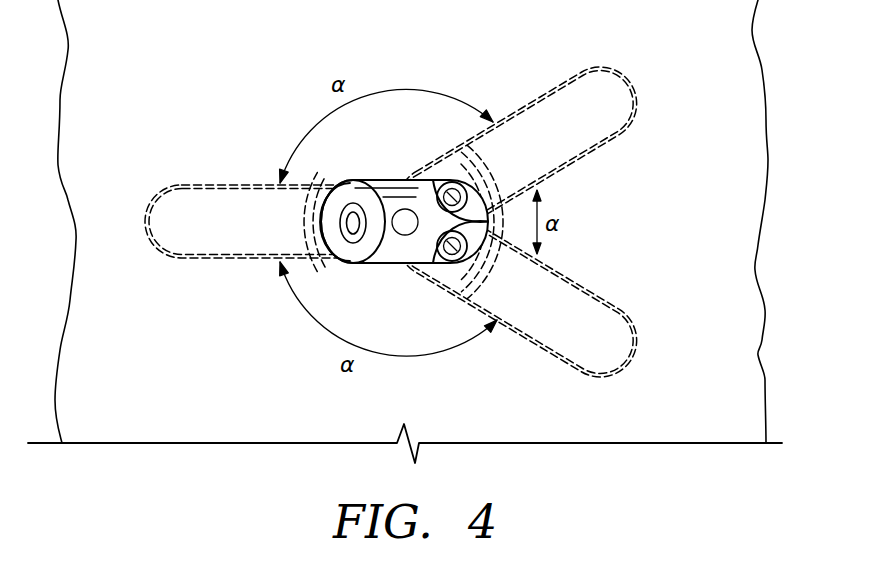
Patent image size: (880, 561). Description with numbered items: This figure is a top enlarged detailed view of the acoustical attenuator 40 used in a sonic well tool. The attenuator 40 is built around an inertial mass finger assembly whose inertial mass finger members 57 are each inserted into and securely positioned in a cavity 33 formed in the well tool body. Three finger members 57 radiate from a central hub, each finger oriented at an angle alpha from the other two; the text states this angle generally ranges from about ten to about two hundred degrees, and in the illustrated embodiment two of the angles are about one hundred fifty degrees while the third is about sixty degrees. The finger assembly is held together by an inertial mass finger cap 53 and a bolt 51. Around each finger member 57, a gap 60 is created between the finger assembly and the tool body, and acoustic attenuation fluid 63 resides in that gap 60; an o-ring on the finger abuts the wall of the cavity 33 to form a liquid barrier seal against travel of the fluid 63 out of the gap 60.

The cavity 33 is at (414, 221).
The acoustical attenuator 40 is at (289, 348).
The bolt 51 is at (349, 223).
The inertial mass finger cap 53 is at (446, 176).
The inertial mass finger member 57 is at (550, 316).
The gap 60 is at (204, 183).
The acoustic attenuation fluid 63 is at (249, 186).